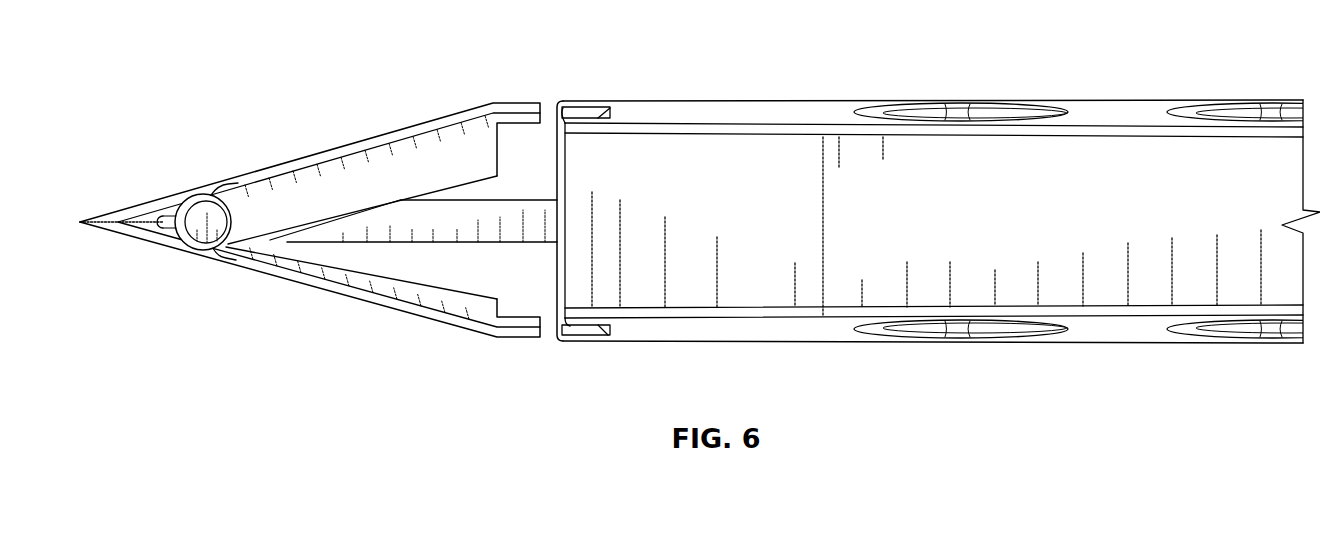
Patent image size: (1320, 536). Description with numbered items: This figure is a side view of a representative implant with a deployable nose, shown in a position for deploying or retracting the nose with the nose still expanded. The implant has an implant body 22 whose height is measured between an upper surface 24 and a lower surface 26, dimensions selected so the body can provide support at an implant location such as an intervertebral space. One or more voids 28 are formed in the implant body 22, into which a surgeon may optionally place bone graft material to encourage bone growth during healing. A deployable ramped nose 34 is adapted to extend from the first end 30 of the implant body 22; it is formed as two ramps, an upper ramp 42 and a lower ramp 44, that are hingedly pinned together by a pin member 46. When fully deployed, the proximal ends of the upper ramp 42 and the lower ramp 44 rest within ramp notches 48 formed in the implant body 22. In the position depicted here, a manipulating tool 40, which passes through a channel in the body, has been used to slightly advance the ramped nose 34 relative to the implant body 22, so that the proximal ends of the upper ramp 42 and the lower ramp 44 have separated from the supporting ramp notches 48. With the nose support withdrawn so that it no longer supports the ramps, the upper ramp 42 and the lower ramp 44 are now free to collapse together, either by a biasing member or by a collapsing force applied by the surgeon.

The implant body 22 is at (685, 303).
The upper surface 24 is at (680, 101).
The lower surface 26 is at (767, 324).
The voids 28 is at (948, 112).
The first end 30 is at (563, 103).
The deployable ramped nose 34 is at (290, 173).
The manipulating tool 40 is at (508, 243).
The upper ramp 42 is at (387, 135).
The lower ramp 44 is at (337, 278).
The pin member 46 is at (200, 217).
The ramp notches 48 is at (590, 106).